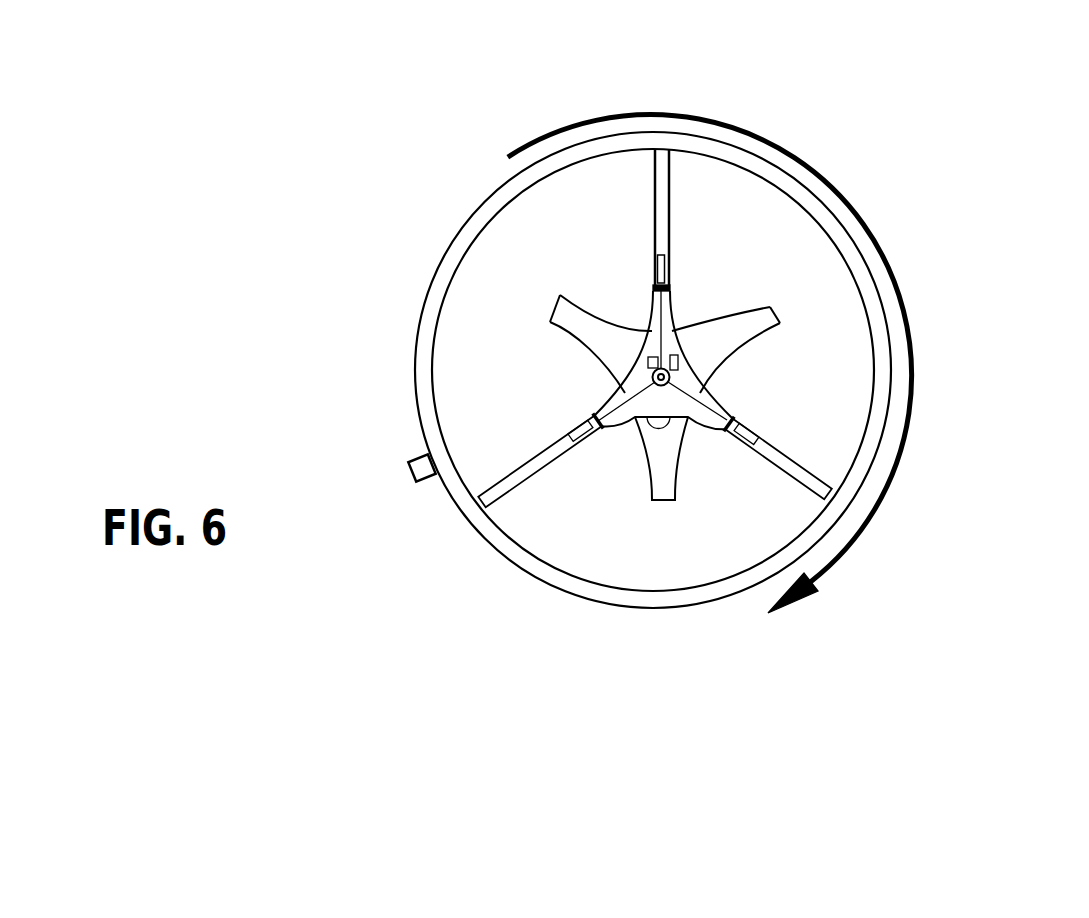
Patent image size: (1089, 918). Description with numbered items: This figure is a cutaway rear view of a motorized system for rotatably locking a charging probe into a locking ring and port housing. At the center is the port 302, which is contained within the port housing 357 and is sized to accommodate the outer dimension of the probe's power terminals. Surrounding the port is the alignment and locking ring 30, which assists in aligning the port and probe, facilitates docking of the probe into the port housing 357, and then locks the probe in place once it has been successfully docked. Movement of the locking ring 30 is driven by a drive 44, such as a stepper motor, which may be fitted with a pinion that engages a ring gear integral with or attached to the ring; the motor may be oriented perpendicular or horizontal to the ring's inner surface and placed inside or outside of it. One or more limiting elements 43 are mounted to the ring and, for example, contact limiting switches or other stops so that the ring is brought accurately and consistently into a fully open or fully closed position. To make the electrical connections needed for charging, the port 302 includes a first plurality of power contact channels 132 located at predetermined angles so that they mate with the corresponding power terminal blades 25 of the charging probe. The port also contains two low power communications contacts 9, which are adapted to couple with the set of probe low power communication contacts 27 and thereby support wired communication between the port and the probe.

The alignment and locking ring 30 is at (467, 228).
The power contact channels 132 is at (872, 417).
The drive 44 is at (934, 120).
The port 302 is at (769, 262).
The power terminal blades 25 is at (655, 275).
The probe low power communication contacts 27 is at (647, 358).
The low power communications contacts 9 is at (678, 357).
The limiting elements 43 is at (408, 463).
The port housing 357 is at (770, 437).